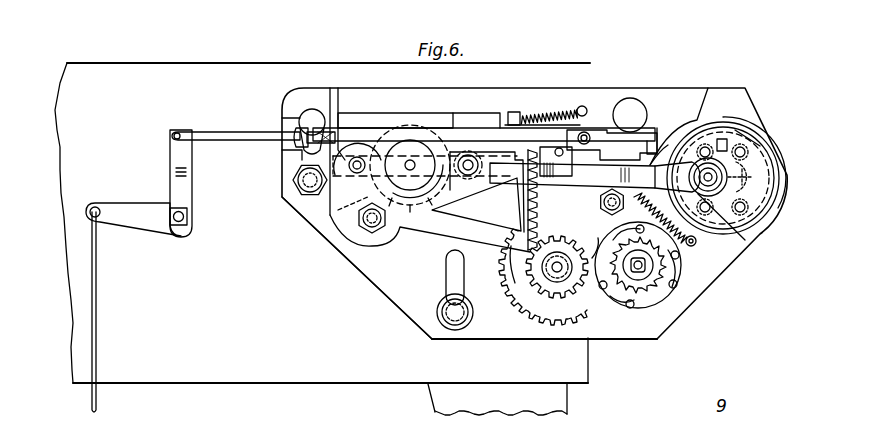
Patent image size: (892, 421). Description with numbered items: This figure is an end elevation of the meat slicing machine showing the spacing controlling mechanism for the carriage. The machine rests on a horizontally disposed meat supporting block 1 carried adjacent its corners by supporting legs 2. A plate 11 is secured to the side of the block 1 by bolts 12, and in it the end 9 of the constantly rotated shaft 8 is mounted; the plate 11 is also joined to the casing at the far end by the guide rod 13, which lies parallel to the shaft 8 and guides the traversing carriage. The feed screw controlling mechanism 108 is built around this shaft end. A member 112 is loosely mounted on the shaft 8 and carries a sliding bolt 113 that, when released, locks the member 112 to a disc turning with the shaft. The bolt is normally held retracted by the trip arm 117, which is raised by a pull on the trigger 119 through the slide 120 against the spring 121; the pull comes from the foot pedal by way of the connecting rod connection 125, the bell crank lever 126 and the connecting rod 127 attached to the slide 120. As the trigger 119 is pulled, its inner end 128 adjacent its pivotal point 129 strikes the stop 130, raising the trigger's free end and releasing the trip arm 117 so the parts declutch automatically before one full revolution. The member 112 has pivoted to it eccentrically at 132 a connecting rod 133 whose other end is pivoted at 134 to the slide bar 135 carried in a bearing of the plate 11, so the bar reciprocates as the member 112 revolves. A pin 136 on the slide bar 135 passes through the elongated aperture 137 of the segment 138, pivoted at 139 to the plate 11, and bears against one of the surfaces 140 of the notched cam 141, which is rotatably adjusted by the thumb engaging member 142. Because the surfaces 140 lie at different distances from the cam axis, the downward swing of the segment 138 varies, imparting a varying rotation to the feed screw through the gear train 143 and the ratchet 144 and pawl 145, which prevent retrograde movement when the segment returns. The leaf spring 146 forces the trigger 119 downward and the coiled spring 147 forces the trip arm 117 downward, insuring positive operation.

The meat supporting block 1 is at (95, 99).
The supporting legs 2 is at (438, 398).
The constantly rotated shaft 8 is at (762, 178).
The end of shaft 9 is at (742, 156).
The plate 11 is at (392, 300).
The bolts 12 is at (294, 186).
The guide rod 13 is at (630, 115).
The feed screw controlling mechanism 108 is at (585, 106).
The member 112 is at (762, 186).
The sliding bolt 113 is at (730, 133).
The trip arm 117 is at (700, 122).
The trigger 119 is at (658, 142).
The slide 120 is at (492, 127).
The spring 121 is at (553, 114).
The connecting rod connection 125 is at (98, 303).
The bell crank lever 126 is at (157, 228).
The connecting rod 127 is at (230, 132).
The inner end of trigger 128 is at (565, 152).
The pivotal point of trigger 129 is at (622, 130).
The stop 130 is at (519, 211).
The eccentric pivot 132 is at (722, 207).
The connecting rod 133 is at (608, 177).
The pivotal connection 134 is at (470, 150).
The slide bar 135 is at (297, 152).
The pin 136 is at (356, 152).
The elongated aperture 137 is at (343, 125).
The segment 138 is at (476, 209).
The pivot of segment 139 is at (355, 226).
The cam surfaces 140 is at (320, 194).
The notched cam 141 is at (359, 160).
The thumb engaging member 142 is at (373, 238).
The gear train 143 is at (642, 303).
The ratchet 144 is at (662, 299).
The pawl 145 is at (684, 277).
The leaf spring 146 is at (592, 130).
The coiled spring 147 is at (696, 239).